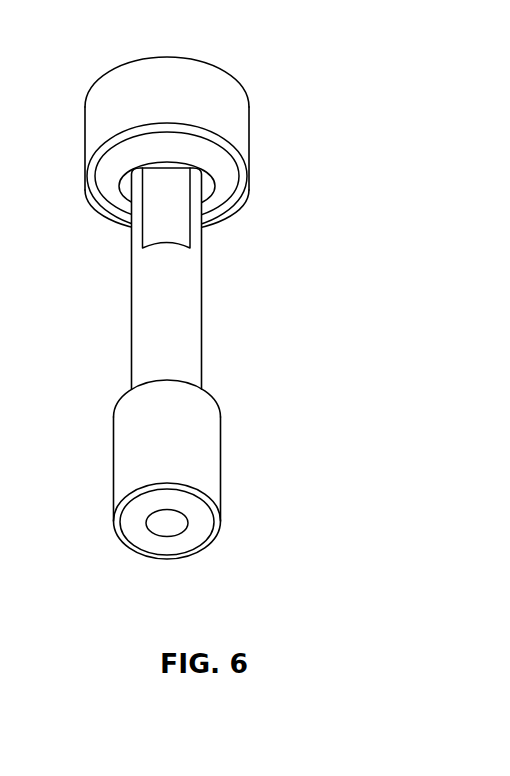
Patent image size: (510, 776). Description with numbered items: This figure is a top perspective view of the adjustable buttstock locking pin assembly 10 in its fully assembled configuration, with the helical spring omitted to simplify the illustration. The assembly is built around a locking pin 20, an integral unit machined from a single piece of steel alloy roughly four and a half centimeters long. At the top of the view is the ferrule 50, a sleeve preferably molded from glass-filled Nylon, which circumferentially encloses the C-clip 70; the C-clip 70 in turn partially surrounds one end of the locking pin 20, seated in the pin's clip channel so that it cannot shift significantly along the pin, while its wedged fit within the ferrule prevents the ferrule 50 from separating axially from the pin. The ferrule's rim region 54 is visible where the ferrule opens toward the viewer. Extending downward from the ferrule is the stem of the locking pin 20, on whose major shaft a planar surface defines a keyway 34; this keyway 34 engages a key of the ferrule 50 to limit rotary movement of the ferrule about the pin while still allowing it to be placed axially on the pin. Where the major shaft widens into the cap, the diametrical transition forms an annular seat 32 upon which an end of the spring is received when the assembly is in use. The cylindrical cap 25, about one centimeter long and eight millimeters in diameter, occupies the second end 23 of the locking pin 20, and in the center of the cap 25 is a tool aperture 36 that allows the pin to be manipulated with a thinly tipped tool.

The adjustable buttstock locking pin assembly 10 is at (238, 60).
The ferrule 50 is at (233, 127).
The rim 54 is at (227, 190).
The C-clip 70 is at (125, 183).
The locking pin 20 is at (167, 307).
The keyway 34 is at (180, 233).
The annular seat 32 is at (130, 397).
The cap 25 is at (195, 433).
The second end 23 is at (195, 523).
The tool aperture 36 is at (168, 530).